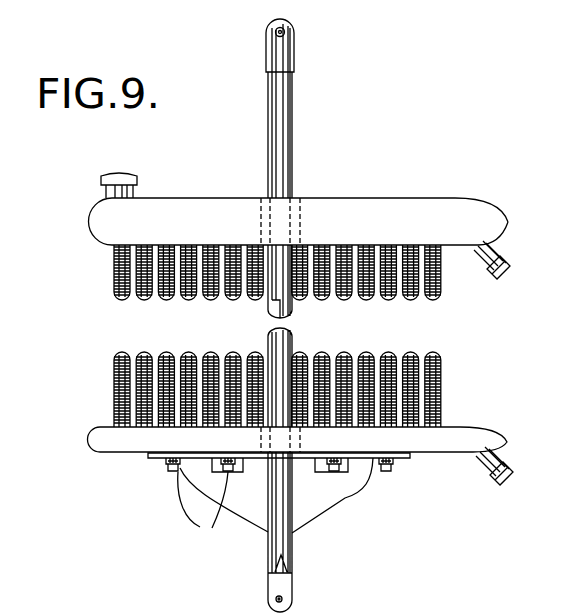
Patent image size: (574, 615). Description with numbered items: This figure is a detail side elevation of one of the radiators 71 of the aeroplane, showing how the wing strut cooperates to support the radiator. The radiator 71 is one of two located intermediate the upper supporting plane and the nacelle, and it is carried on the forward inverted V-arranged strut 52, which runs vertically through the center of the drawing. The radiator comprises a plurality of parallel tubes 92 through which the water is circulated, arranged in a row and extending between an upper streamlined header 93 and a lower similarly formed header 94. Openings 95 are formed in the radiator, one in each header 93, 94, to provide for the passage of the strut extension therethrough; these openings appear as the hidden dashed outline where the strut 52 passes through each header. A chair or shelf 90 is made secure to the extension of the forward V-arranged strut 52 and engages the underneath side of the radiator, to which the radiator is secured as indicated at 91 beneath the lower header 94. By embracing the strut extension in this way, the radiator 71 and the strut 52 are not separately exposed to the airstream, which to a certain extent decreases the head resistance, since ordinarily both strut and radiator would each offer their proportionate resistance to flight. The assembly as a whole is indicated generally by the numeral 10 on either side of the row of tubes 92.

The heat exchanger assembly 10 is at (503, 383).
The inverted V-arranged strut 52 is at (293, 90).
The radiator 71 is at (434, 198).
The chair or shelf 90 is at (338, 498).
The securing point of radiator to chair 91 is at (217, 507).
The parallel tubes 92 is at (432, 352).
The upper streamlined header 93 is at (370, 206).
The lower header 94 is at (458, 446).
The openings 95 is at (298, 210).